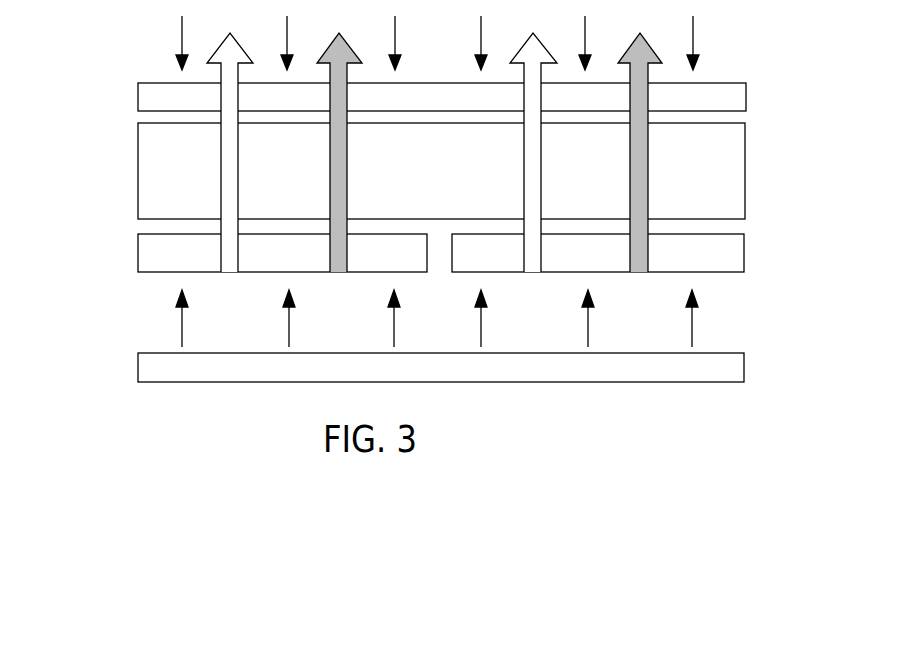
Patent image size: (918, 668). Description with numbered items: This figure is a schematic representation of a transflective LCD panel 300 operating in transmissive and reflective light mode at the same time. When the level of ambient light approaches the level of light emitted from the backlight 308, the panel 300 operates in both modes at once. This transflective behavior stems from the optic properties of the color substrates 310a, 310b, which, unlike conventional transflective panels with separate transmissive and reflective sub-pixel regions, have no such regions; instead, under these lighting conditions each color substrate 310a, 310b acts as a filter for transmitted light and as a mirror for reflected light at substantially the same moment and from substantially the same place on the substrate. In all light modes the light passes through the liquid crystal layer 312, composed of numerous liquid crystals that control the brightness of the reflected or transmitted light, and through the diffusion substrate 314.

The panel 300 is at (443, 265).
The backlight 308 is at (159, 367).
The color substrate 310a is at (152, 262).
The color substrate 310b is at (735, 253).
The liquid crystal layer 312 is at (152, 182).
The diffusion substrate 314 is at (153, 93).